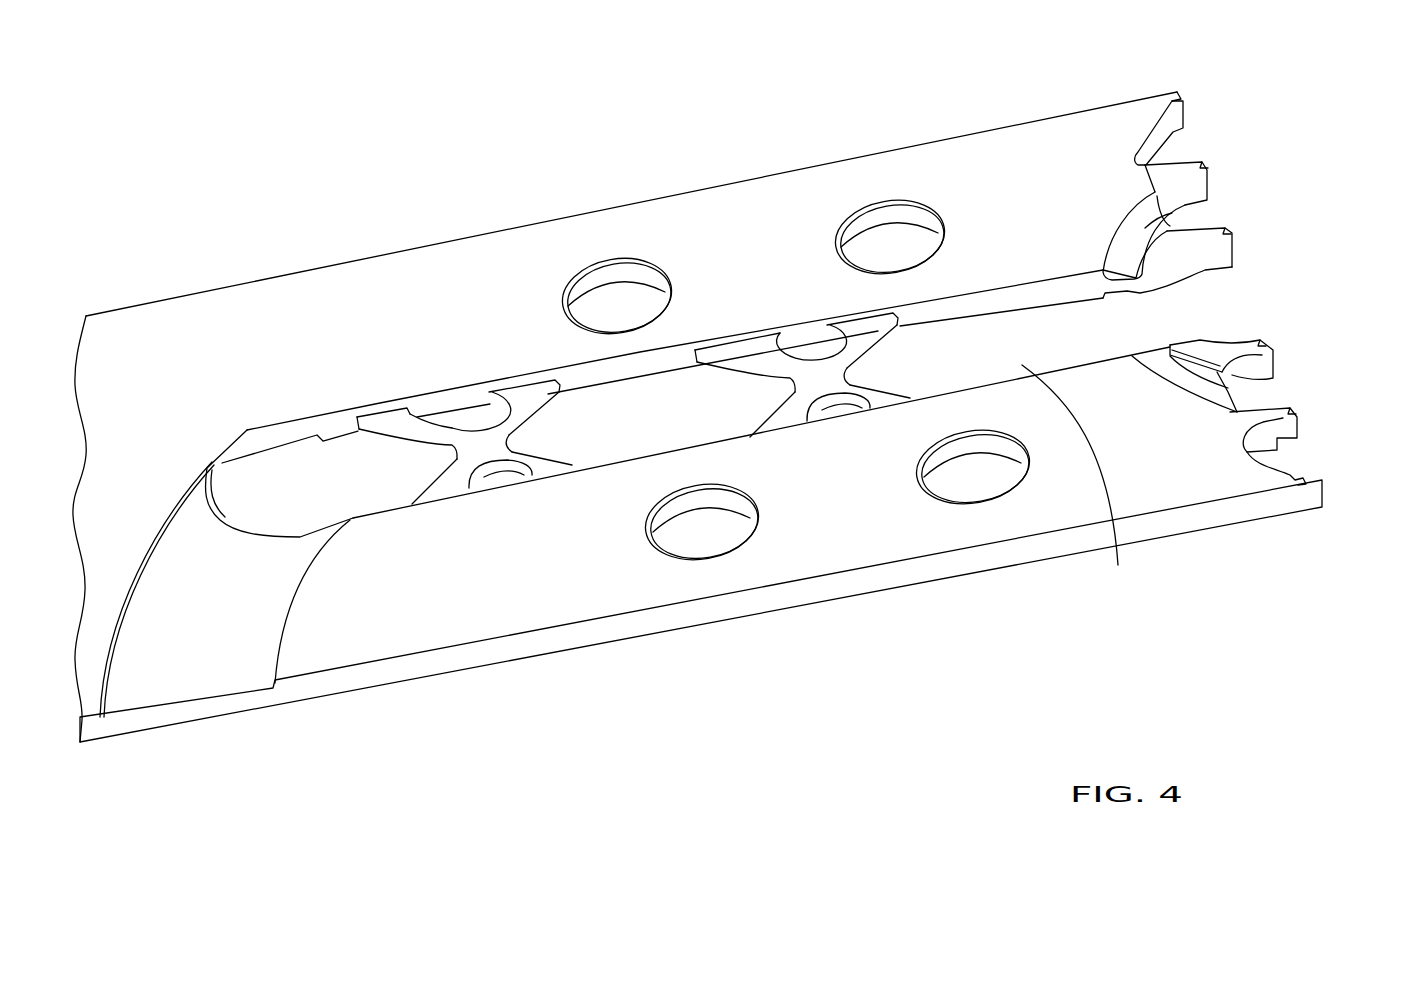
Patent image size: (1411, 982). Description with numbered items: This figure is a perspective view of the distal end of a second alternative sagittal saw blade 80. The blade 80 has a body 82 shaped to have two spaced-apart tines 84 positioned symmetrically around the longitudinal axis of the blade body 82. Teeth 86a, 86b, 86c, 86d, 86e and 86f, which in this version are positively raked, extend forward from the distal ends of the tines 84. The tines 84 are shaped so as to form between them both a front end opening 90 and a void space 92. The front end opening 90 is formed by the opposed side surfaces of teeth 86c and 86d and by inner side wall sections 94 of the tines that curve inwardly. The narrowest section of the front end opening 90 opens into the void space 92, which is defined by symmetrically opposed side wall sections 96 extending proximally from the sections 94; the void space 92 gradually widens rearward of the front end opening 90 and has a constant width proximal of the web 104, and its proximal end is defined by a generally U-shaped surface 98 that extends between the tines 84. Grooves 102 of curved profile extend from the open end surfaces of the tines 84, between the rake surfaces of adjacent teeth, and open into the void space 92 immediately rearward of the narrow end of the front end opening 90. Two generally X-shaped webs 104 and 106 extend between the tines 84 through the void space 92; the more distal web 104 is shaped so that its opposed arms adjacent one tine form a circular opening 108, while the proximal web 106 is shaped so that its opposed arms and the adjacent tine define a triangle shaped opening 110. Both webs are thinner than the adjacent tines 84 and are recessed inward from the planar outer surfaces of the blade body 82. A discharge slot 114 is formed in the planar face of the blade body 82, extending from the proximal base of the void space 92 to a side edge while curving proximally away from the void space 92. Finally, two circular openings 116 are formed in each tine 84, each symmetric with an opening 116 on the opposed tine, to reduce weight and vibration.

The sagittal saw blade 80 is at (432, 207).
The blade body 82 is at (320, 330).
The tines 84 is at (732, 235).
The tooth 86a is at (1186, 95).
The tooth 86b is at (1208, 163).
The tooth 86c is at (1238, 234).
The tooth 86d is at (1270, 345).
The tooth 86e is at (1305, 418).
The tooth 86f is at (1333, 482).
The front end opening 90 is at (1217, 303).
The void space 92 is at (1118, 565).
The inner side wall section 94 is at (1220, 270).
The side wall section 96 is at (993, 308).
The U-shaped surface 98 is at (217, 467).
The groove 102 is at (1163, 214).
The web 104 is at (847, 363).
The web 106 is at (512, 440).
The circular opening 108 is at (757, 378).
The triangle shaped opening 110 is at (440, 443).
The discharge slot 114 is at (220, 670).
The circular openings 116 is at (658, 292).